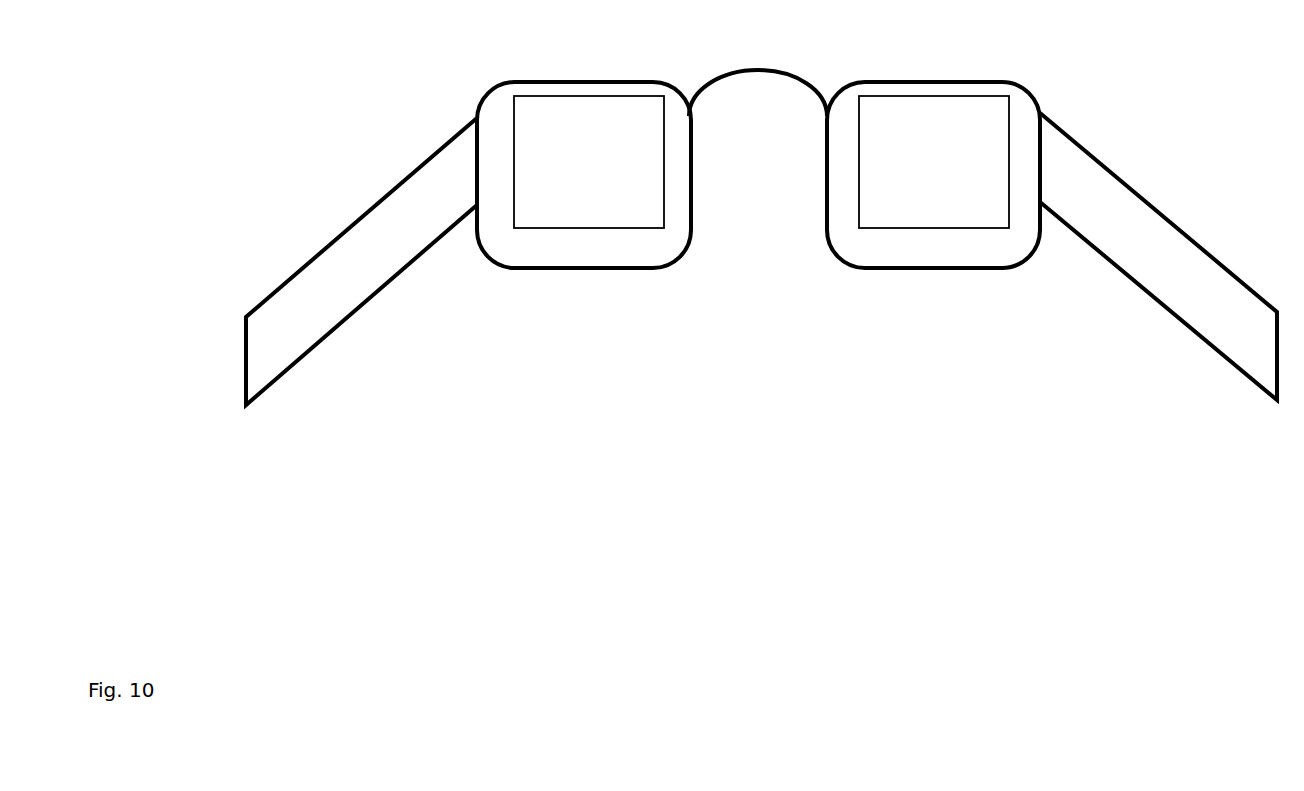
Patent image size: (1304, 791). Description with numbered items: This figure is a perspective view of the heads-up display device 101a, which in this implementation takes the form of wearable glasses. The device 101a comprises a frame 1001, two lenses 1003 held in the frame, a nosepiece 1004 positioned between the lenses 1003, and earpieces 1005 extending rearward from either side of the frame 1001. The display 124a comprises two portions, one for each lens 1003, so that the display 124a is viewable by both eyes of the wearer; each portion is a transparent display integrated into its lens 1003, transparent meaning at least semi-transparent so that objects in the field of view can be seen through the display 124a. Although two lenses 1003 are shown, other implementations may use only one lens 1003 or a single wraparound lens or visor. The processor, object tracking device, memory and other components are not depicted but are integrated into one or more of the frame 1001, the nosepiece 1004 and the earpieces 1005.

The heads-up display (HUD) device 101a is at (292, 242).
The frame 1001 is at (477, 120).
The lenses 1003 is at (521, 260).
The display 124a is at (562, 128).
The nosepiece 1004 is at (757, 69).
The earpieces 1005 is at (261, 325).